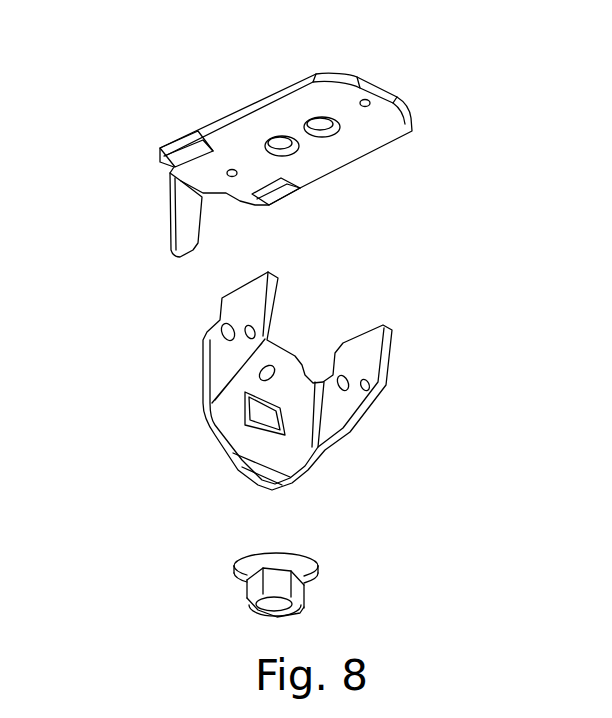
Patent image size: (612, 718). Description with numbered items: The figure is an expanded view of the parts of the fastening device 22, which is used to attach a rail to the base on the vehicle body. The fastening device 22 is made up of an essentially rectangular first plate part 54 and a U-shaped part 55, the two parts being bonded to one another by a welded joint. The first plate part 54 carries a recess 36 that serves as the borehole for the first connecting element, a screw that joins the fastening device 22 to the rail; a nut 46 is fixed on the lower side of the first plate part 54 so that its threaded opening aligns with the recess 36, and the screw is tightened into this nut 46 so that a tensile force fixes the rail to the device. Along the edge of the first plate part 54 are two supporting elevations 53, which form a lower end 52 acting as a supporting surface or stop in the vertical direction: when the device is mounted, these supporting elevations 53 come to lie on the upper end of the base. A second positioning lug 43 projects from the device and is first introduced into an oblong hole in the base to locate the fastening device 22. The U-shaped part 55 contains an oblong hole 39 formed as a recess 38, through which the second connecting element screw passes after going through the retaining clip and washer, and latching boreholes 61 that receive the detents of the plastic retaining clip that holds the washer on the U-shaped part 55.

The fastening device 22 is at (274, 322).
The recess 36 is at (322, 113).
The recess 38 is at (330, 462).
The oblong hole 39 is at (287, 435).
The second positioning lug 43 is at (188, 223).
The nut 46 is at (232, 594).
The lower end 52 is at (173, 168).
The supporting elevations 53 is at (240, 173).
The first plate part 54 is at (228, 146).
The U-shaped part 55 is at (252, 400).
The latching boreholes 61 is at (212, 333).